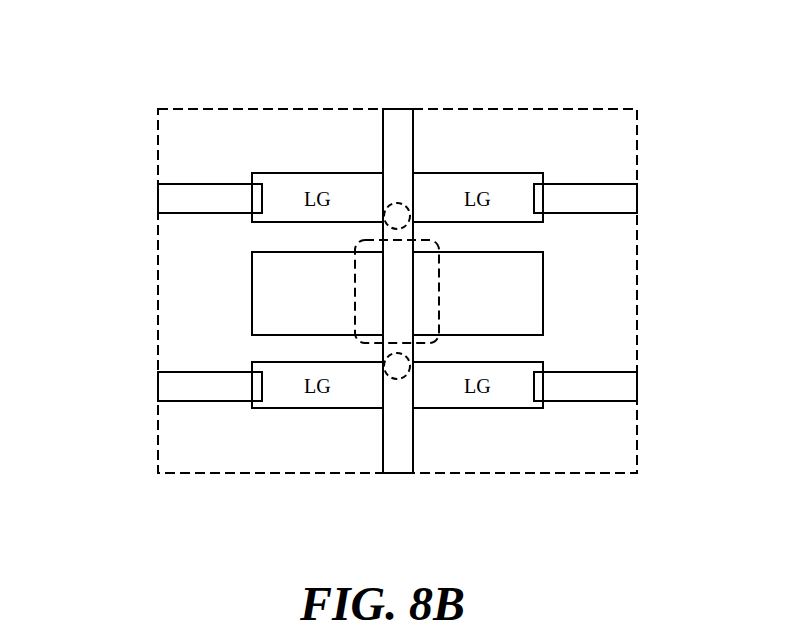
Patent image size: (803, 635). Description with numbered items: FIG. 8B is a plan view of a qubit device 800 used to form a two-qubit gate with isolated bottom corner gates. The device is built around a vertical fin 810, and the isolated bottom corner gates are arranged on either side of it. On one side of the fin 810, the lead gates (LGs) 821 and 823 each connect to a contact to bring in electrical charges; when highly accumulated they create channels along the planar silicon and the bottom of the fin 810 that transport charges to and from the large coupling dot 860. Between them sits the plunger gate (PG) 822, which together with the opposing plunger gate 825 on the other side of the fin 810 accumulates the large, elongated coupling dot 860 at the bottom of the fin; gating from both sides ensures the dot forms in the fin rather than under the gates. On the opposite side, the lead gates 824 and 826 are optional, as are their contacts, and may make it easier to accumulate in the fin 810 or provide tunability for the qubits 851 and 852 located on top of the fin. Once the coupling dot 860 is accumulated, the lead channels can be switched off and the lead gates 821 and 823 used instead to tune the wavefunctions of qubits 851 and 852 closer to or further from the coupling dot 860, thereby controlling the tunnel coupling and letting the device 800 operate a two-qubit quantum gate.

The qubit device 800 is at (86, 93).
The fin 810 is at (395, 462).
The bottom corner gate (LG) 821 is at (252, 188).
The bottom corner gate (PG) 822 is at (262, 315).
The bottom corner gate (LG) 823 is at (272, 399).
The bottom corner gate (LG) 824 is at (505, 172).
The bottom corner gate (PG) 825 is at (523, 295).
The bottom corner gate (LG) 826 is at (523, 398).
The qubit 851 is at (398, 205).
The qubit 852 is at (390, 375).
The large coupling dot 860 is at (362, 244).